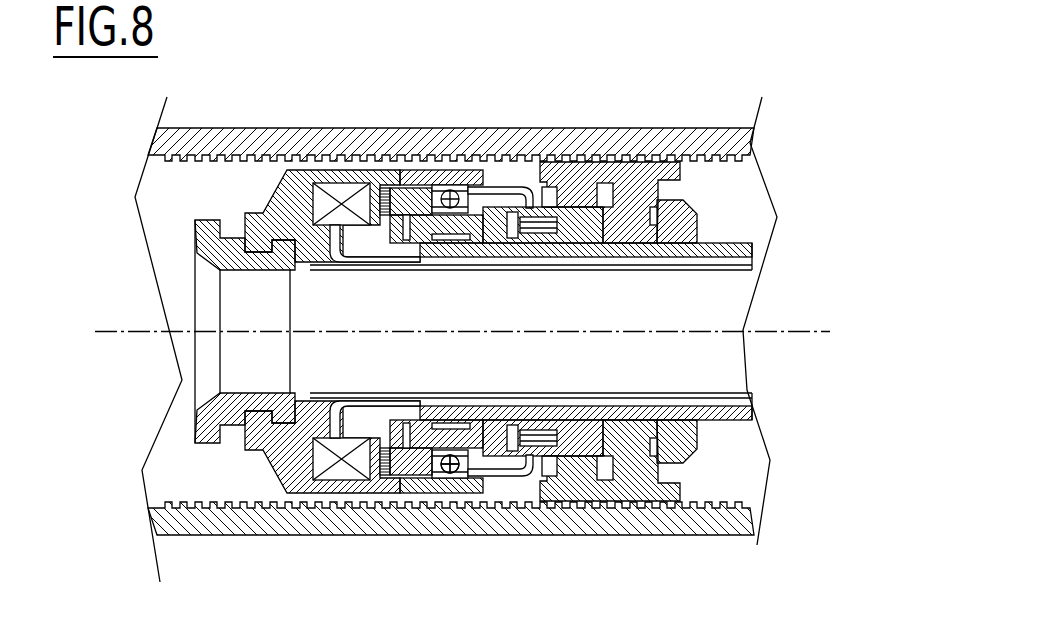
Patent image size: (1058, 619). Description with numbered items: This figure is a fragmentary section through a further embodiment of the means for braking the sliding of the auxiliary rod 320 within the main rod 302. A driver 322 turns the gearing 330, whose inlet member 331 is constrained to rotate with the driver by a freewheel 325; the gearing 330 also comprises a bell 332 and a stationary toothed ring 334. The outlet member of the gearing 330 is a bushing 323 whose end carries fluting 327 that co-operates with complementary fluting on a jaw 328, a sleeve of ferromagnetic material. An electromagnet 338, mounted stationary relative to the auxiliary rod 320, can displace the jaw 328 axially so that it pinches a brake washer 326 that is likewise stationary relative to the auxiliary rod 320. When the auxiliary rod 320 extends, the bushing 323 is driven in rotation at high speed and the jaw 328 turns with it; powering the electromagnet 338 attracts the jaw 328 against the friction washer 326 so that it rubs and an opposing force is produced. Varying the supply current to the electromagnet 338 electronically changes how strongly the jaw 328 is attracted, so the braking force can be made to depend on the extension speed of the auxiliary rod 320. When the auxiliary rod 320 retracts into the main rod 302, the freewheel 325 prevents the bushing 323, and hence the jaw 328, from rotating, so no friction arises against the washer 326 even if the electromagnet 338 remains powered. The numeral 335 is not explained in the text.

The main rod 302 is at (216, 148).
The auxiliary rod 320 is at (730, 243).
The driver 322 is at (630, 173).
The bushing 323 is at (478, 440).
The freewheel 325 is at (608, 258).
The brake washer 326 is at (370, 173).
The fluting 327 is at (420, 232).
The jaw 328 is at (413, 190).
The gearing 330 is at (511, 172).
The inlet member 331 is at (594, 214).
The bell 332 is at (533, 435).
The stationary toothed ring 334 is at (445, 173).
The ball 335 is at (438, 468).
The electromagnet 338 is at (332, 188).